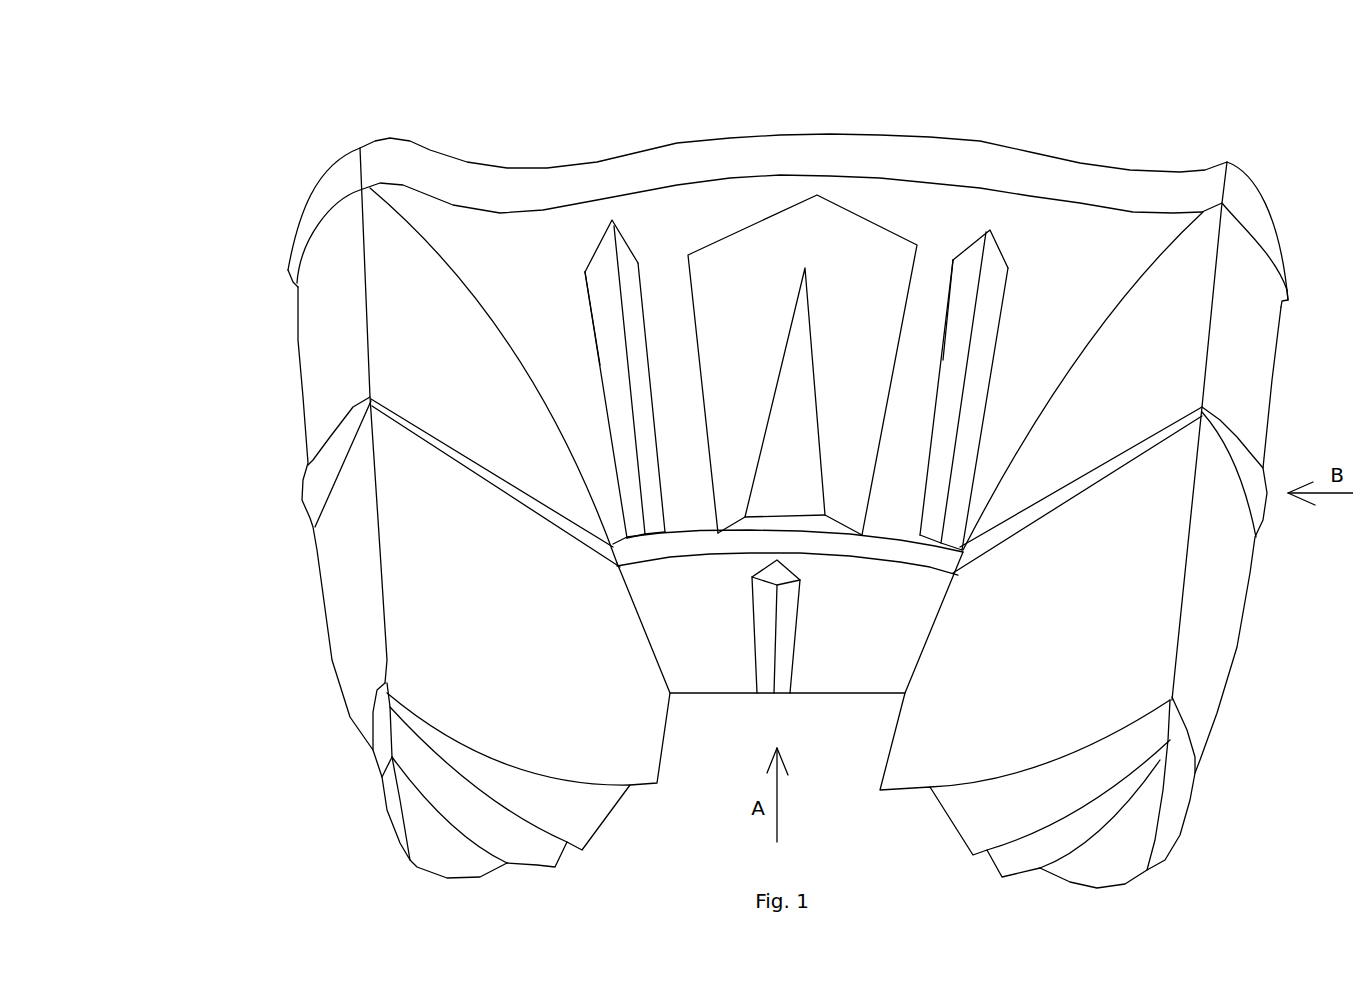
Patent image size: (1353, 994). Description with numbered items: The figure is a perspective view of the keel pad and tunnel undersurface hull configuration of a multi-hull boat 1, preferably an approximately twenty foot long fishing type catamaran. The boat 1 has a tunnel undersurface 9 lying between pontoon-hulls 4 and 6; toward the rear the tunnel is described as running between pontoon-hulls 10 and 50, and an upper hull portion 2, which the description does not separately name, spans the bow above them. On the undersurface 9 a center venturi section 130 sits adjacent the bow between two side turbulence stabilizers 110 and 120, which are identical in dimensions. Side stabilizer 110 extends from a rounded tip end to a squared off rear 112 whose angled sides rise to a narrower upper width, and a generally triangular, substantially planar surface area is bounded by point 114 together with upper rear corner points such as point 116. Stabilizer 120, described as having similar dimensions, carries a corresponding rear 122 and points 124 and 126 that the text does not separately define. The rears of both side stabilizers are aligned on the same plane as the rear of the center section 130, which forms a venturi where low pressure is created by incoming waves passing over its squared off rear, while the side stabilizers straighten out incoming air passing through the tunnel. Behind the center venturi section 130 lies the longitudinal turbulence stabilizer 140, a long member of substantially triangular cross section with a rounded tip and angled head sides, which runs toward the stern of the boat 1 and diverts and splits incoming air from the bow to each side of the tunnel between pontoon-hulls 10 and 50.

The boat 1 is at (396, 372).
The upper rim portion 2 is at (788, 195).
The pontoon-hull 4 is at (308, 518).
The pontoon-hull 6 is at (1142, 467).
The tunnel undersurface 9 is at (493, 320).
The pontoon-hull 10 is at (443, 780).
The pontoon-hull 50 is at (1101, 790).
The side turbulence stabilizer 110 is at (594, 382).
The rear 112 is at (614, 170).
The point 114 is at (572, 318).
The point 116 is at (667, 546).
The side turbulence stabilizer 120 is at (946, 391).
The second blade tip 122 is at (1012, 183).
The second blade outer edge 124 is at (1008, 310).
The second blade base rim 126 is at (1077, 523).
The center venturi section 130 is at (802, 365).
The longitudinal turbulence stabilizer 140 is at (742, 626).